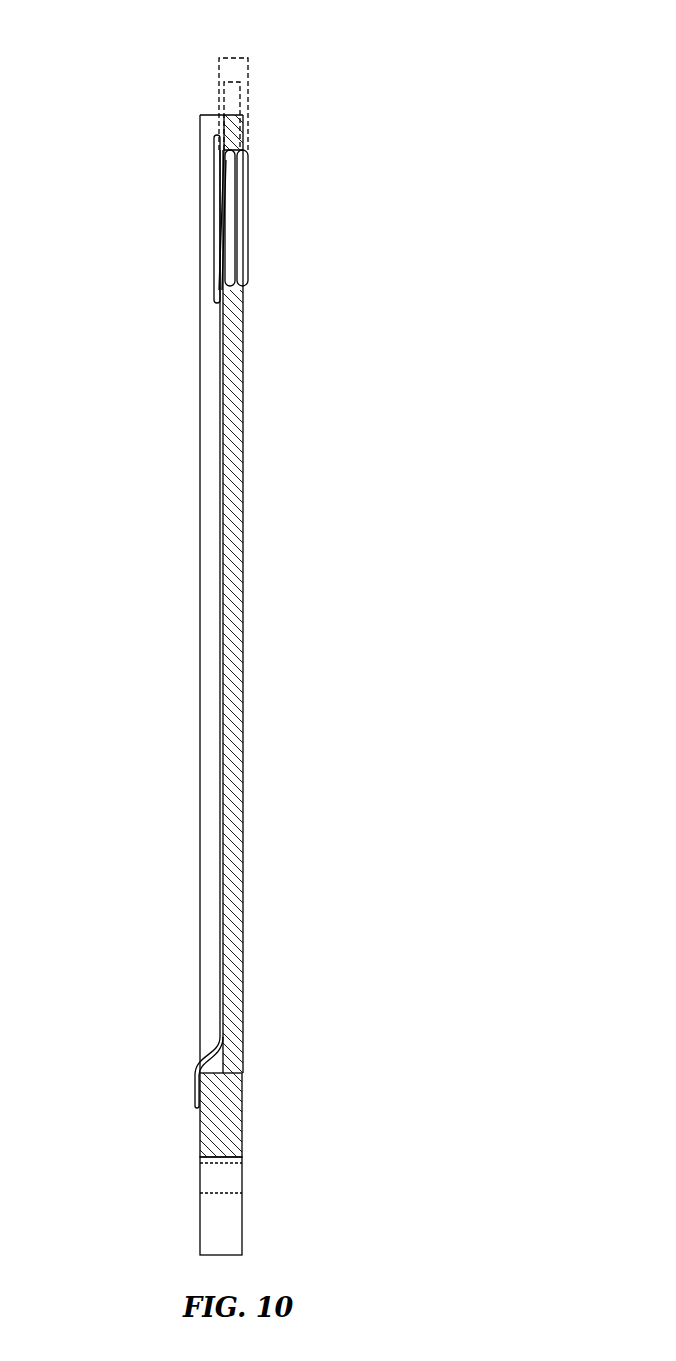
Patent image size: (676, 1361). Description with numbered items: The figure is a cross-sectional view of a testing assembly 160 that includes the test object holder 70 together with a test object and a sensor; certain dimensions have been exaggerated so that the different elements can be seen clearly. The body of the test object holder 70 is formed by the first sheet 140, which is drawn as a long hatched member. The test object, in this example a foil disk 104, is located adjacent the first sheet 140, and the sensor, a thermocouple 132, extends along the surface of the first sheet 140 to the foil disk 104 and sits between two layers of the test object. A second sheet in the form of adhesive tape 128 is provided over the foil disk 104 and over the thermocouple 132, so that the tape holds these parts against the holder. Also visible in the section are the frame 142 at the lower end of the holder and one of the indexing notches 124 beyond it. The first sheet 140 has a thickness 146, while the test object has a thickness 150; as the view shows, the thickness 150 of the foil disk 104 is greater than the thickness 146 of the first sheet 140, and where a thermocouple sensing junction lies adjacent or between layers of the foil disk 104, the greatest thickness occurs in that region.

The test object holder 70 is at (112, 628).
The foil disk 104 is at (242, 202).
The indexing notch 124 is at (215, 1213).
The adhesive tape 128 is at (216, 297).
The thermocouple 132 is at (238, 267).
The first sheet 140 is at (243, 470).
The frame 142 is at (234, 1125).
The thickness 146 is at (240, 82).
The thickness 150 is at (229, 58).
The testing assembly 160 is at (506, 226).